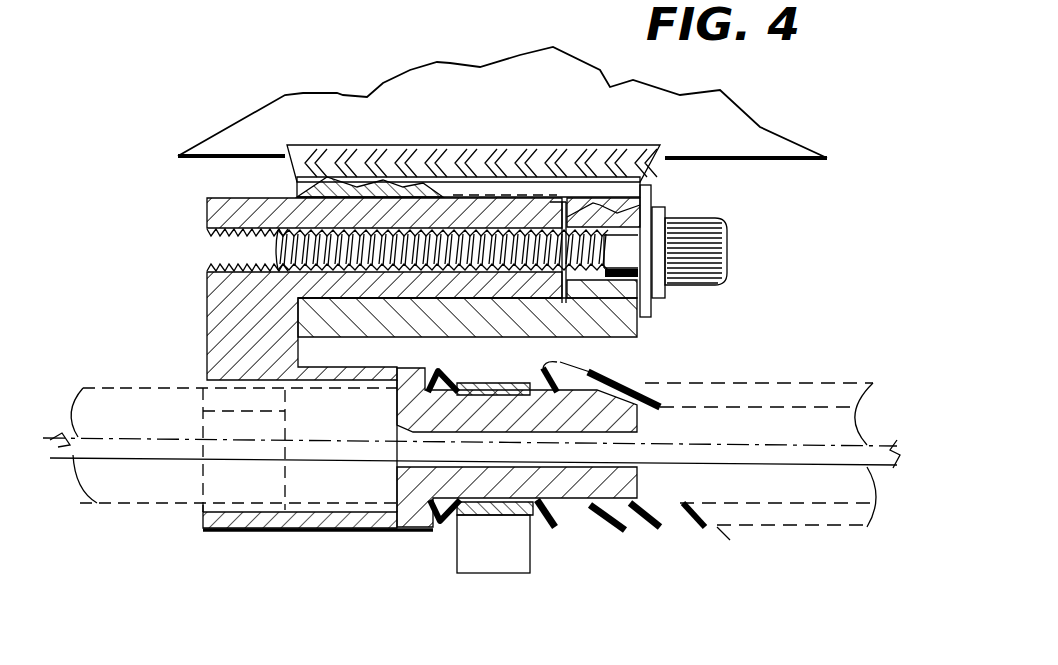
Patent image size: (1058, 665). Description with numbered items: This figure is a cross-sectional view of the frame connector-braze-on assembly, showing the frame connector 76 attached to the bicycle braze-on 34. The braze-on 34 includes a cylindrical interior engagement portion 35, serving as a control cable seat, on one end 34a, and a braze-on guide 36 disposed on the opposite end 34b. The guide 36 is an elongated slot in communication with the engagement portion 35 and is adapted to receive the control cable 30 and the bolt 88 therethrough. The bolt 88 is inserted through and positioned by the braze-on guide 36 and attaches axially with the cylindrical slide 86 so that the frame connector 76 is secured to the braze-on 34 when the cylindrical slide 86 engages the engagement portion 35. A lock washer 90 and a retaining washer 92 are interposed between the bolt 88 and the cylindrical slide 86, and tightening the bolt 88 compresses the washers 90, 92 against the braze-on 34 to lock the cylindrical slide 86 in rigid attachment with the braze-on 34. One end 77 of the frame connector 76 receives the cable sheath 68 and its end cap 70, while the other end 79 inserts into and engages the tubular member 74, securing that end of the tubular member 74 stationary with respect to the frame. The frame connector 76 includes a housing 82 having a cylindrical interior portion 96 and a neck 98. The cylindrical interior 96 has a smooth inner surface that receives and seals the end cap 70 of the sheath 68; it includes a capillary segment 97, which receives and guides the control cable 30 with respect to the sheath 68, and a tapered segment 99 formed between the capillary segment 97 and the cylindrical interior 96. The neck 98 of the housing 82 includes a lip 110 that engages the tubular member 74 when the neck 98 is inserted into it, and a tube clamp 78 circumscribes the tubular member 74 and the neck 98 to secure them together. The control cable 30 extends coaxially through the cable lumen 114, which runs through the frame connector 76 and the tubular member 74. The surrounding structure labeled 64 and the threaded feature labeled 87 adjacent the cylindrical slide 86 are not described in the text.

The control cable 30 is at (77, 457).
The braze-on 34 is at (616, 338).
The one end of braze-on 34a is at (297, 187).
The opposite end of braze-on 34b is at (650, 374).
The engagement portion 35 is at (362, 287).
The braze-on guide 36 is at (570, 222).
The hood 64 is at (752, 131).
The cable sheath 68 is at (118, 390).
The end cap 70 is at (198, 415).
The tubular member 74 is at (728, 540).
The frame connector 76 is at (207, 324).
The one end of frame connector 77 is at (207, 358).
The tube clamp 78 is at (497, 385).
The other end of frame connector 79 is at (440, 532).
The housing 82 is at (300, 528).
The cylindrical slide 86 is at (217, 287).
The internal thread 87 is at (230, 243).
The bolt 88 is at (730, 226).
The lock washer 90 is at (654, 191).
The retaining washer 92 is at (662, 300).
The cylindrical interior portion 96 is at (203, 510).
The capillary segment 97 is at (650, 440).
The neck 98 is at (383, 470).
The tapered segment 99 is at (385, 470).
The lip 110 is at (567, 467).
The cable lumen 114 is at (595, 470).